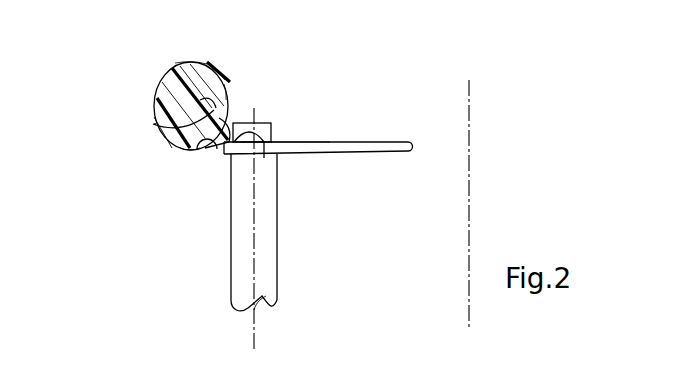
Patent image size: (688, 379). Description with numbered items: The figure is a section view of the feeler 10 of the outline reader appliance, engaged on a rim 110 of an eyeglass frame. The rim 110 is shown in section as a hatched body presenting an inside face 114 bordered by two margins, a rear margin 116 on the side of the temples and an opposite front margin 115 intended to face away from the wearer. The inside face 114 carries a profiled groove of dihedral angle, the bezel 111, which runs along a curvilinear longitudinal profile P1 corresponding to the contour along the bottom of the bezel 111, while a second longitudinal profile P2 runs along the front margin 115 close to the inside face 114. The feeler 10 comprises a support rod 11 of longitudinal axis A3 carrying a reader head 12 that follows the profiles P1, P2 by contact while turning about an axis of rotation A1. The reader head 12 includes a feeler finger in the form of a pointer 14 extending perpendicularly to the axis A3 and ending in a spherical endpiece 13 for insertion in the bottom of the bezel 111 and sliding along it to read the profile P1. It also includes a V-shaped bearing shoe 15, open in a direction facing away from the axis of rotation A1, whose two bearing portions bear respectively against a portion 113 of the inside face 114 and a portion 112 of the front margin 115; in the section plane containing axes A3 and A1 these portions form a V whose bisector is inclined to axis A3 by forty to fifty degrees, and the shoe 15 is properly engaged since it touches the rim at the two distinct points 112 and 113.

The feeler 10 is at (362, 112).
The support rod 11 is at (281, 270).
The reader head 12 is at (283, 141).
The spherical endpiece 13 is at (410, 152).
The pointer 14 is at (353, 153).
The V-shaped bearing shoe 15 is at (263, 152).
The rim 110 is at (152, 100).
The bezel 111 is at (226, 90).
The portion of the front margin 112 is at (222, 144).
The portion of the inside face 113 is at (224, 122).
The inside face 114 is at (221, 77).
The front margin 115 is at (190, 152).
The rear margin 116 is at (181, 63).
The longitudinal profile P1 is at (156, 124).
The longitudinal profile P2 is at (222, 133).
The axis of rotation A1 is at (470, 116).
The longitudinal axis A3 is at (254, 331).